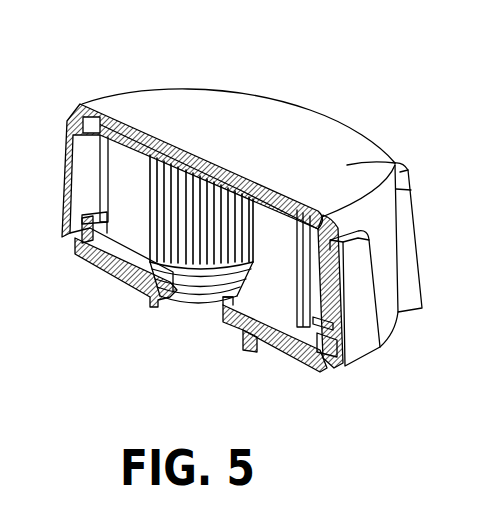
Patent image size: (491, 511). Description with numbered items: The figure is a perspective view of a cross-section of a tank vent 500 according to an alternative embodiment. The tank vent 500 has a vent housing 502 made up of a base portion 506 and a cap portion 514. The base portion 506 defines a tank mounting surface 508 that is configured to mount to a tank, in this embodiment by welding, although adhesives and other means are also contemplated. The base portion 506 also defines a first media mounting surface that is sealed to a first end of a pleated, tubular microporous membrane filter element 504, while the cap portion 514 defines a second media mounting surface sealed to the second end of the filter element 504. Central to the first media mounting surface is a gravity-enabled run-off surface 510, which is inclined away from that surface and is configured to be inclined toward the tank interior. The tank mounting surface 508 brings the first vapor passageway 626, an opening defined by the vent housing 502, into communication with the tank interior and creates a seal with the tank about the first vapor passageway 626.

The tank vent 500 is at (347, 45).
The vent housing 502 is at (395, 164).
The pleated, tubular microporous membrane filter element 504 is at (128, 157).
The base portion 506 is at (125, 297).
The tank mounting surface 508 is at (103, 266).
The gravity-enabled run-off surface 510 is at (230, 288).
The cap portion 514 is at (183, 90).
The first vapor passageway 626 is at (189, 340).